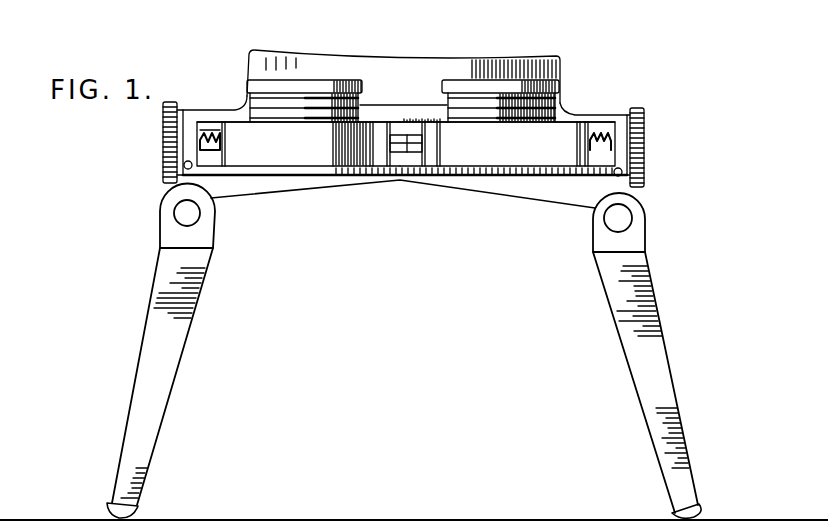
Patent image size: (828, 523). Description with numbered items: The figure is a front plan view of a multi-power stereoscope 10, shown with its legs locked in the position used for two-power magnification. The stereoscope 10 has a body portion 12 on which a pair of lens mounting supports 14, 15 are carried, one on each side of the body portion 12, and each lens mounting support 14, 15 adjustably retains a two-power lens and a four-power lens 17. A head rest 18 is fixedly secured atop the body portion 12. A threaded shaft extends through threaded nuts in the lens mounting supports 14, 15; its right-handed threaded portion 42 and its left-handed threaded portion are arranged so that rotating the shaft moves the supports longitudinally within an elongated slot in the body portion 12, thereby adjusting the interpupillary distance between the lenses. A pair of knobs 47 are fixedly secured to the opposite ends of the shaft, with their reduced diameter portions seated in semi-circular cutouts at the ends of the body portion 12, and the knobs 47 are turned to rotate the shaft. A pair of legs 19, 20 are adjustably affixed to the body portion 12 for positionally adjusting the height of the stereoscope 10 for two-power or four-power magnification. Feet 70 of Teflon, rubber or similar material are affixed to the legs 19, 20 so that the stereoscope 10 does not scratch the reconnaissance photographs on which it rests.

The multi-power stereoscope 10 is at (597, 91).
The body portion 12 is at (605, 117).
The lens mounting support 14 is at (322, 158).
The lens mounting support 15 is at (473, 158).
The four-power lens 17 is at (303, 83).
The head rest 18 is at (430, 52).
The leg 19 is at (147, 318).
The leg 20 is at (638, 287).
The threaded portion 42 is at (201, 130).
The knob 47 is at (163, 137).
The foot 70 is at (107, 504).